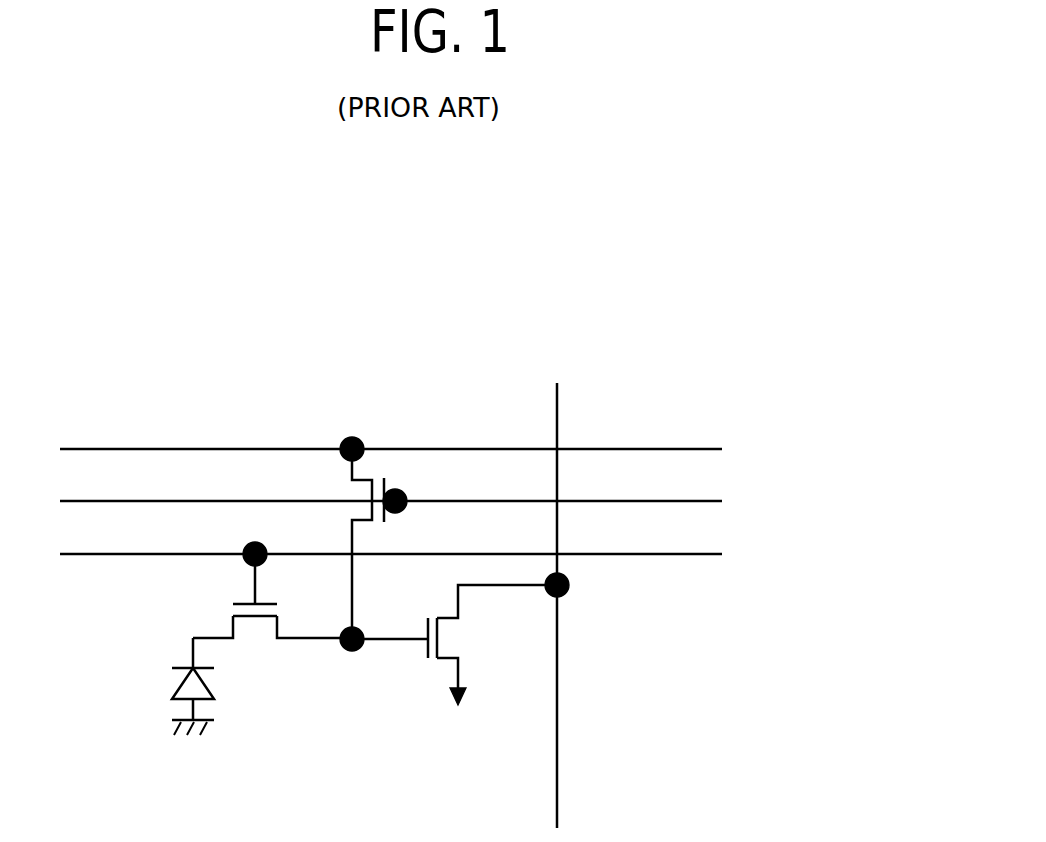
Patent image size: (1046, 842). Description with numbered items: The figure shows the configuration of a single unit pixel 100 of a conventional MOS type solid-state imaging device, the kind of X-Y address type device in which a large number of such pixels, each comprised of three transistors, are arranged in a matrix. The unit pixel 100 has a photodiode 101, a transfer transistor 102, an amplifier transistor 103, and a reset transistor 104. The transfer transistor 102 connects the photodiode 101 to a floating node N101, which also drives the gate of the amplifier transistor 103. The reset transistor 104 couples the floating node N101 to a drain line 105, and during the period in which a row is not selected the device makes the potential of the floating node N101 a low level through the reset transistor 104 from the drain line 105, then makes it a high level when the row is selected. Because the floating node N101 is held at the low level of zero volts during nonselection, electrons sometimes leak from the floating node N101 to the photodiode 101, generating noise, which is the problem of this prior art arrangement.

The unit pixel 100 is at (622, 377).
The photodiode 101 is at (160, 687).
The transfer transistor 102 is at (256, 632).
The amplifier transistor 103 is at (450, 638).
The reset transistor 104 is at (343, 489).
The drain line 105 is at (162, 447).
The floating node N101 is at (352, 652).